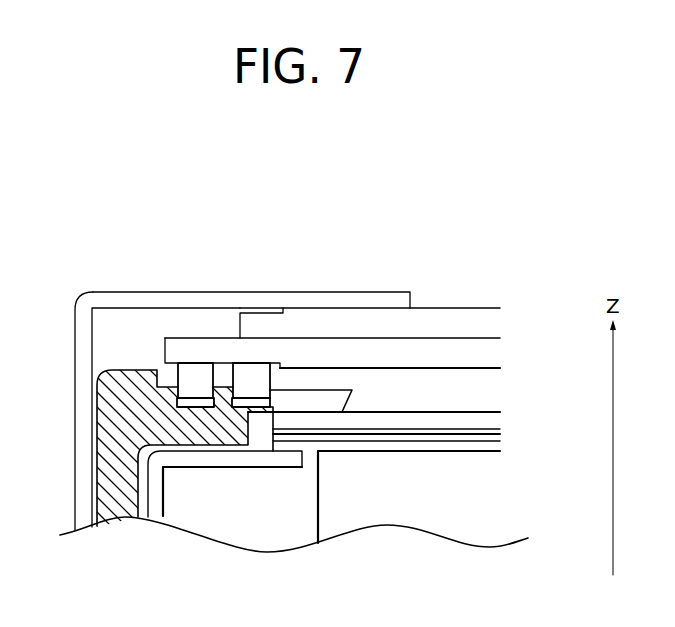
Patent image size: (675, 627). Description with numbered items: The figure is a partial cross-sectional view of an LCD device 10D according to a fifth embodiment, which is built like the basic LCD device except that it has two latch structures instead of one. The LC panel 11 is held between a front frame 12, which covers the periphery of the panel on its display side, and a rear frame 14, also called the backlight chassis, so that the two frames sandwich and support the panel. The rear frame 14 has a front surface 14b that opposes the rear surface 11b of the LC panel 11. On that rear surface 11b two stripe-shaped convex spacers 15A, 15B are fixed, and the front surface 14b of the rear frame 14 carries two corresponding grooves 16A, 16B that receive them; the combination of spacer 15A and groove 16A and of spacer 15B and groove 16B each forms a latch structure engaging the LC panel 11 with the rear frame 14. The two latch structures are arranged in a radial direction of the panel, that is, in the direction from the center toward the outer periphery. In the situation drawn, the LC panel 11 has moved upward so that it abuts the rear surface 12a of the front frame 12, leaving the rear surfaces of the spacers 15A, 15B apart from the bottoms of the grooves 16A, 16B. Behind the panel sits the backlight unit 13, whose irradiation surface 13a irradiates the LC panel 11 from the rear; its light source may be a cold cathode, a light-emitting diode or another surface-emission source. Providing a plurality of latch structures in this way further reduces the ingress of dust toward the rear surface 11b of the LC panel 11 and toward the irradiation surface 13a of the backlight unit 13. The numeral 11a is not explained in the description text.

The LCD device 10D is at (243, 205).
The LC panel 11 is at (507, 338).
The display surface of display panel 11a is at (448, 308).
The rear surface of the LC panel 11b is at (471, 369).
The front frame 12 is at (83, 293).
The rear surface of the front frame 12a is at (345, 308).
The backlight unit 13 is at (442, 500).
The irradiation surface 13a is at (418, 413).
The rear frame 14 is at (120, 497).
The front surface of the rear frame 14b is at (336, 398).
The spacer 15A is at (198, 395).
The spacer 15B is at (256, 395).
The groove 16A is at (198, 395).
The groove 16B is at (256, 395).